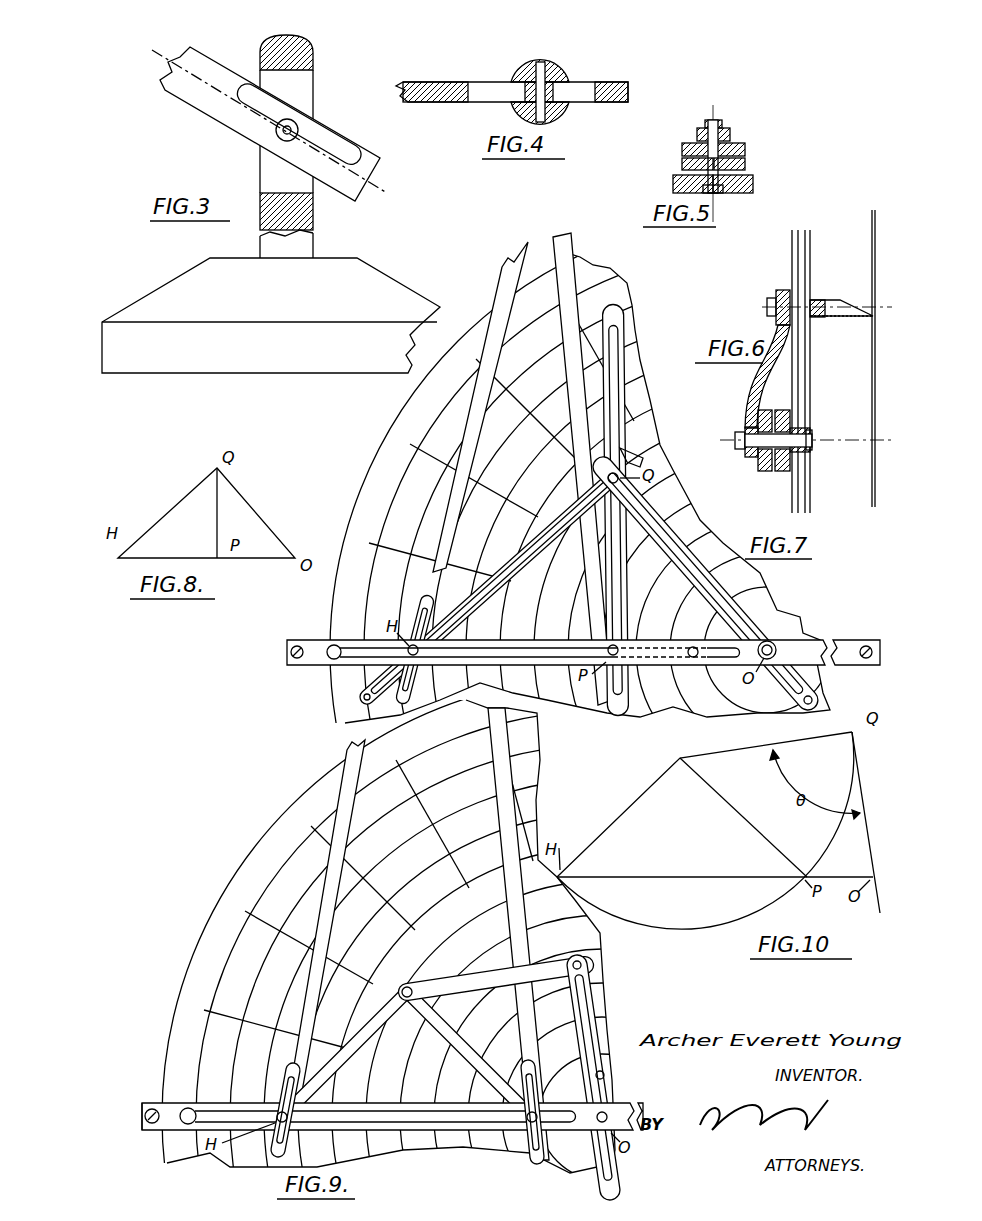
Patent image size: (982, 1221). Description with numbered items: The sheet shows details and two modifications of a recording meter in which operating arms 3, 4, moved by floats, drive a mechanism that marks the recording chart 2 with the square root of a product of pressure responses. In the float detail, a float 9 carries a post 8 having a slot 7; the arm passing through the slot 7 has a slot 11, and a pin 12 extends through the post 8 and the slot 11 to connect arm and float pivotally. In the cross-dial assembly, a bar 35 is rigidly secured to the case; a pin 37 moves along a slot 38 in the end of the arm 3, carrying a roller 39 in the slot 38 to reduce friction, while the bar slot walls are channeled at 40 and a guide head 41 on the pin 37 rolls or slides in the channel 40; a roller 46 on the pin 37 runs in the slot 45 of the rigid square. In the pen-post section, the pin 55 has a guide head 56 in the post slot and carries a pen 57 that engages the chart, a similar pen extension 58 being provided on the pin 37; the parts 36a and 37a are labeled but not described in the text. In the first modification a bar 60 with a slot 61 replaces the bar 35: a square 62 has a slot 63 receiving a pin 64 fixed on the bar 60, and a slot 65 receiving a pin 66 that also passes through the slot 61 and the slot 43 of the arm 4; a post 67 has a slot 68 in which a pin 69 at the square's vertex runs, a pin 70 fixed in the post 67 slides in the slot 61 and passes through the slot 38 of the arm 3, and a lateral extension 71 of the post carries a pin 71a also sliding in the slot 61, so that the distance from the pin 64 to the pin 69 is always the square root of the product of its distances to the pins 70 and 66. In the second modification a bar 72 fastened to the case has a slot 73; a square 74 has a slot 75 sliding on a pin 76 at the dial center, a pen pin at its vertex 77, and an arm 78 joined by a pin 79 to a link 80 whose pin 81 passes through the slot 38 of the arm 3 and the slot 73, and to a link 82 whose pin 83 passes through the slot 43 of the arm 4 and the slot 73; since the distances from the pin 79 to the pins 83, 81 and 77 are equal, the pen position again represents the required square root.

In FIG. 6, the recording chart 2 is at (871, 458).
In FIG. 7, the recording chart 2 is at (395, 491).
In FIG. 9, the recording chart 2 is at (212, 1003).
In FIG. 5, the operating arm 3 is at (745, 152).
In FIG. 7, the operating arm 3 is at (573, 244).
In FIG. 9, the operating arm 3 is at (500, 808).
In FIG. 3, the operating arm 4 is at (265, 118).
In FIG. 7, the operating arm 4 is at (504, 282).
In FIG. 9, the operating arm 4 is at (330, 861).
In FIG. 3, the slot 7 is at (307, 98).
In FIG. 4, the slot 7 is at (556, 80).
In FIG. 4, the post 8 is at (528, 72).
In FIG. 3, the float 9 is at (380, 282).
In FIG. 3, the slot 11 is at (247, 118).
In FIG. 4, the slot 11 is at (498, 96).
In FIG. 3, the pin 12 is at (278, 138).
In FIG. 4, the pin 12 is at (543, 64).
In FIG. 5, the bar 35 is at (753, 185).
In FIG. 6, the bar 36a is at (803, 388).
In FIG. 5, the pin 37 is at (722, 124).
In FIG. 6, the pin 37 is at (766, 450).
In FIG. 6, the washer 37a is at (808, 428).
In FIG. 6, the slot 38 is at (770, 474).
In FIG. 7, the slot 38 is at (638, 600).
In FIG. 5, the roller 39 is at (740, 146).
In FIG. 6, the roller 39 is at (748, 432).
In FIG. 5, the channel 40 is at (735, 193).
In FIG. 5, the guide head 41 is at (673, 188).
In FIG. 7, the slot 43 is at (421, 608).
In FIG. 9, the slot 43 is at (290, 1070).
In FIG. 5, the slot 45 is at (745, 165).
In FIG. 6, the slot 45 is at (797, 475).
In FIG. 5, the roller 46 is at (682, 165).
In FIG. 6, the roller 46 is at (785, 455).
In FIG. 6, the pointer shaft 55 is at (815, 298).
In FIG. 6, the guide head 56 is at (794, 290).
In FIG. 6, the pen 57 is at (845, 300).
In FIG. 6, the pen extension 58 is at (758, 388).
In FIG. 7, the bar 60 is at (838, 648).
In FIG. 7, the slot 61 is at (535, 650).
In FIG. 7, the square 62 is at (663, 494).
In FIG. 7, the slot 63 is at (695, 569).
In FIG. 7, the pin 64 is at (770, 645).
In FIG. 7, the slot 65 is at (530, 552).
In FIG. 7, the pin 66 is at (428, 660).
In FIG. 7, the post 67 is at (626, 381).
In FIG. 7, the slot 68 is at (616, 404).
In FIG. 7, the pin 69 is at (641, 461).
In FIG. 7, the pin 70 is at (625, 651).
In FIG. 7, the lateral extension 71 is at (680, 678).
In FIG. 7, the pin 71a is at (756, 675).
In FIG. 9, the bar 72 is at (634, 1120).
In FIG. 9, the slot 73 is at (398, 1116).
In FIG. 9, the square 74 is at (586, 976).
In FIG. 9, the slot 75 is at (600, 1068).
In FIG. 9, the pin 76 is at (620, 1108).
In FIG. 9, the vertex 77 is at (582, 962).
In FIG. 9, the arm 78 is at (480, 982).
In FIG. 9, the pin 79 is at (407, 986).
In FIG. 10, the pin 79 is at (683, 757).
In FIG. 9, the link 80 is at (462, 1042).
In FIG. 9, the pin 81 is at (540, 1108).
In FIG. 9, the link 82 is at (362, 1036).
In FIG. 9, the pin 83 is at (305, 1111).